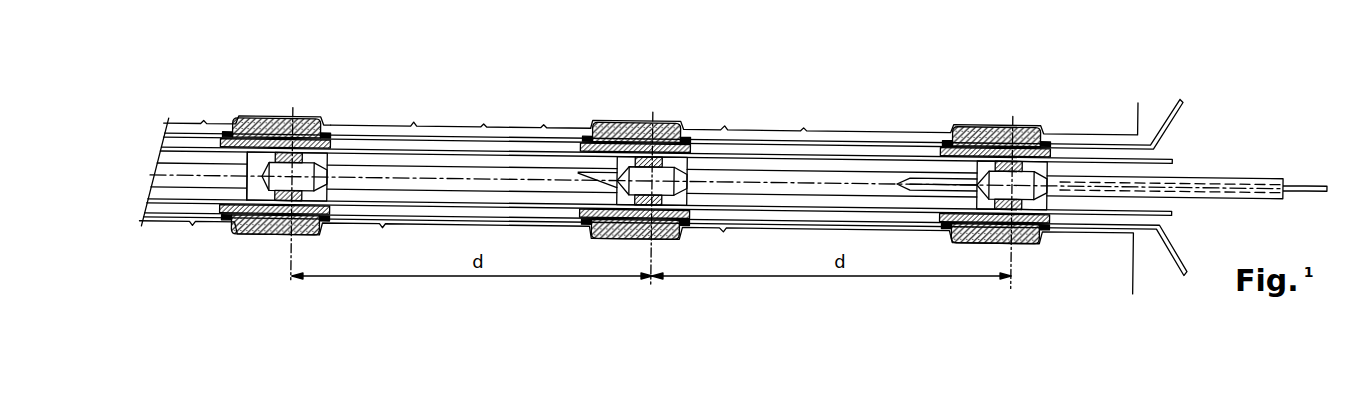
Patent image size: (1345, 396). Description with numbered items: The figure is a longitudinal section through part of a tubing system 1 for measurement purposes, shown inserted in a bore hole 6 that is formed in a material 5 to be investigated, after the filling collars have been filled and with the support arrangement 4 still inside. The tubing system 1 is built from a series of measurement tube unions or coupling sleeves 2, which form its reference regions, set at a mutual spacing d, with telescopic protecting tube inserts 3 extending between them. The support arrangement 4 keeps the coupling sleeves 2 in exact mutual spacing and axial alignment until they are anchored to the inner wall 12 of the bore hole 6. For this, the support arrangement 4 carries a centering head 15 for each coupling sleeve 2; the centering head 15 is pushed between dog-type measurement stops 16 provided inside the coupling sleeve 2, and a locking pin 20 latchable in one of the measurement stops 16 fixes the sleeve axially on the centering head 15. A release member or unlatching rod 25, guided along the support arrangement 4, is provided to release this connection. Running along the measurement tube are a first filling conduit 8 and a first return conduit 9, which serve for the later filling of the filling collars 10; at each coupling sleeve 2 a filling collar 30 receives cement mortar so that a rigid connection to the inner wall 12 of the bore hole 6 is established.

The tubing system 1 is at (820, 140).
The measurement tube union or coupling sleeve 2 is at (636, 153).
The telescopic protecting tube insert 3 is at (508, 152).
The support arrangement 4 is at (183, 170).
The material 5 is at (914, 106).
The bore hole 6 is at (195, 222).
The first filling conduit 8 is at (710, 134).
The first return conduit 9 is at (762, 218).
The filling collar 10 is at (1018, 125).
The inner wall of the bore hole 12 is at (432, 128).
The centering head 15 is at (304, 166).
The measurement stop or surface 16 is at (653, 150).
The locking pin 20 is at (603, 189).
The release member or unlatching rod 25 is at (1300, 187).
The filling collar 30 is at (248, 122).